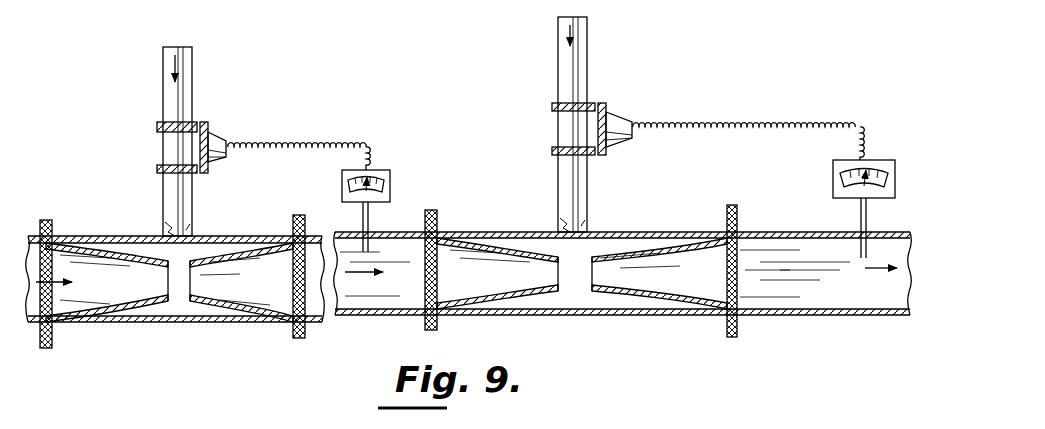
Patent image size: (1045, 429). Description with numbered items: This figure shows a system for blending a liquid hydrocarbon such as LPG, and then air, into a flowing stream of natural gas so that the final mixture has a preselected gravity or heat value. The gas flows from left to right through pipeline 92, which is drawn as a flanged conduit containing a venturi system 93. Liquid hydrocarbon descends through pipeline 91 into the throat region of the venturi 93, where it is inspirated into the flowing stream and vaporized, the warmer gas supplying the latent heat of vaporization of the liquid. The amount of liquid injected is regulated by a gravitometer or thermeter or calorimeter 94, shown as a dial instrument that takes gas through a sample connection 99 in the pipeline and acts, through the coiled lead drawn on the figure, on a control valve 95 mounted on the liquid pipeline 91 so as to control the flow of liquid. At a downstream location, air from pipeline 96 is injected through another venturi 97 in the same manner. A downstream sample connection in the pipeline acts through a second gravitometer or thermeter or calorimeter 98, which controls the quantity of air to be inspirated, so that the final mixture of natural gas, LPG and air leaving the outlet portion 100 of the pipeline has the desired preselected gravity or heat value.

The pipeline 91 is at (193, 191).
The pipeline 92 is at (33, 235).
The venturi system 93 is at (132, 237).
The gravitometer or thermeter or calorimeter 94 is at (390, 177).
The control valve 95 is at (215, 140).
The pipeline 96 is at (582, 178).
The venturi 97 is at (630, 232).
The gravitometer or thermeter or calorimeter 98 is at (834, 199).
The sample connection 99 is at (400, 245).
The pipe outlet section 100 is at (869, 296).